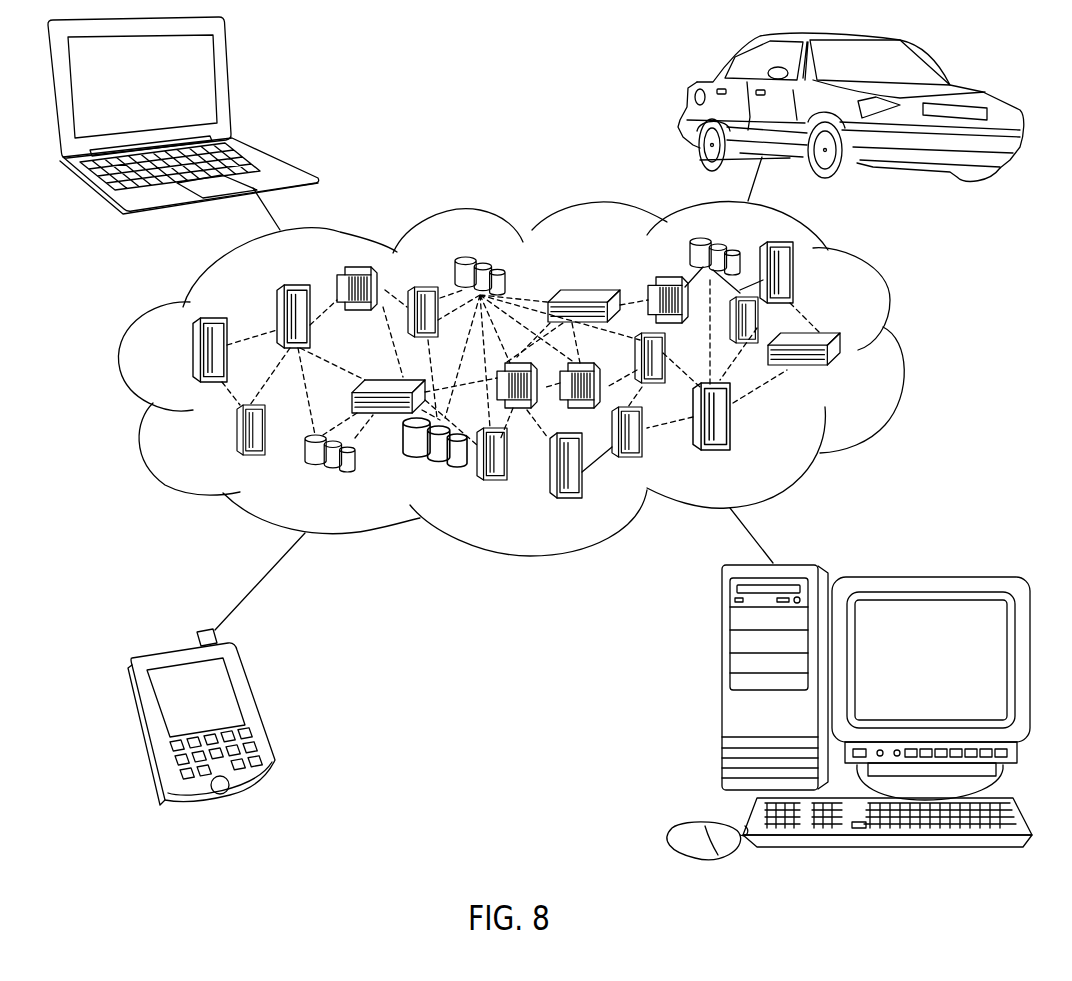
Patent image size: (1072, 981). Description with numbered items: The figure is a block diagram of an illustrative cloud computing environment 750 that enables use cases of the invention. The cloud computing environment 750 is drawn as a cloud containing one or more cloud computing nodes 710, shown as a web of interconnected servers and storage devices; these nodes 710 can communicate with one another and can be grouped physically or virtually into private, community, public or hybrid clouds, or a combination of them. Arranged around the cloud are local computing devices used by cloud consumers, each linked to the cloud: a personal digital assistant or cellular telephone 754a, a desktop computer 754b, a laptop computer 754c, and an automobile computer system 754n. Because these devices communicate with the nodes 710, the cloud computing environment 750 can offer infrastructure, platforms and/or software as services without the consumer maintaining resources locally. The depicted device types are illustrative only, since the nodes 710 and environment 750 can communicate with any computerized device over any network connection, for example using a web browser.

The cloud computing nodes 710 is at (860, 373).
The cloud computing environment 750 is at (890, 287).
The personal digital assistant or cellular telephone 754a is at (253, 702).
The desktop computer 754b is at (722, 690).
The laptop computer 754c is at (227, 75).
The automobile computer system 754n is at (695, 85).